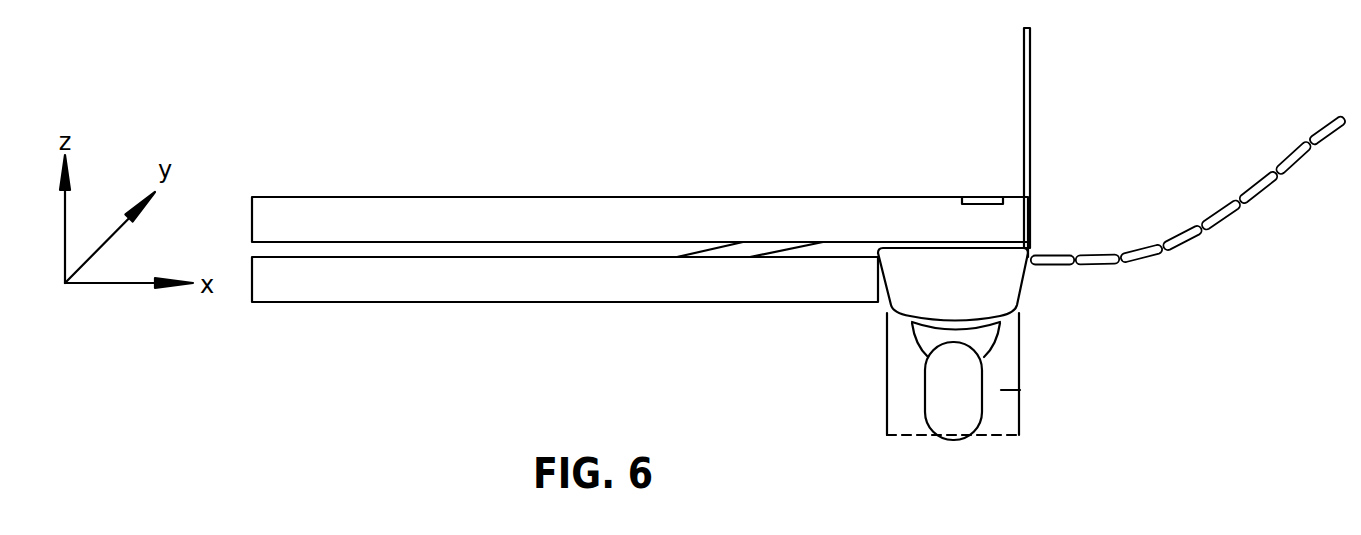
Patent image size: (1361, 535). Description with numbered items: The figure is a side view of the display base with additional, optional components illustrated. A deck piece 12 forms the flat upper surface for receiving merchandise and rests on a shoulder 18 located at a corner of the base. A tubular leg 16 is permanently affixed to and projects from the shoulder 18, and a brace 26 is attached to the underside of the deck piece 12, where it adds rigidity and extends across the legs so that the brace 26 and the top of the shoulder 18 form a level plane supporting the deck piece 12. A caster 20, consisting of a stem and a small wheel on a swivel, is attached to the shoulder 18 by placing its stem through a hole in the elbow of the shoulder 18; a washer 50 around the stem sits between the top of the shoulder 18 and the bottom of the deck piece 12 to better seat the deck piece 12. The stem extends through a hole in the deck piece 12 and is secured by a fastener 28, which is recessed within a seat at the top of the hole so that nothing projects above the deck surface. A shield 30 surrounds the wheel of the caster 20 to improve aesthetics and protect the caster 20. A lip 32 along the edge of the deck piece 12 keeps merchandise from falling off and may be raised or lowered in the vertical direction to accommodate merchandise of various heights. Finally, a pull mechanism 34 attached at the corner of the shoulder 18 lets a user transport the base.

The deck piece 12 is at (890, 222).
The tubular leg 16 is at (715, 283).
The shoulder 18 is at (1003, 290).
The caster 20 is at (1020, 325).
The brace 26 is at (749, 255).
The fastener 28 is at (983, 197).
The shield 30 is at (1022, 412).
The lip 32 is at (1031, 67).
The pull mechanism 34 is at (1330, 132).
The washer 50 is at (1032, 246).